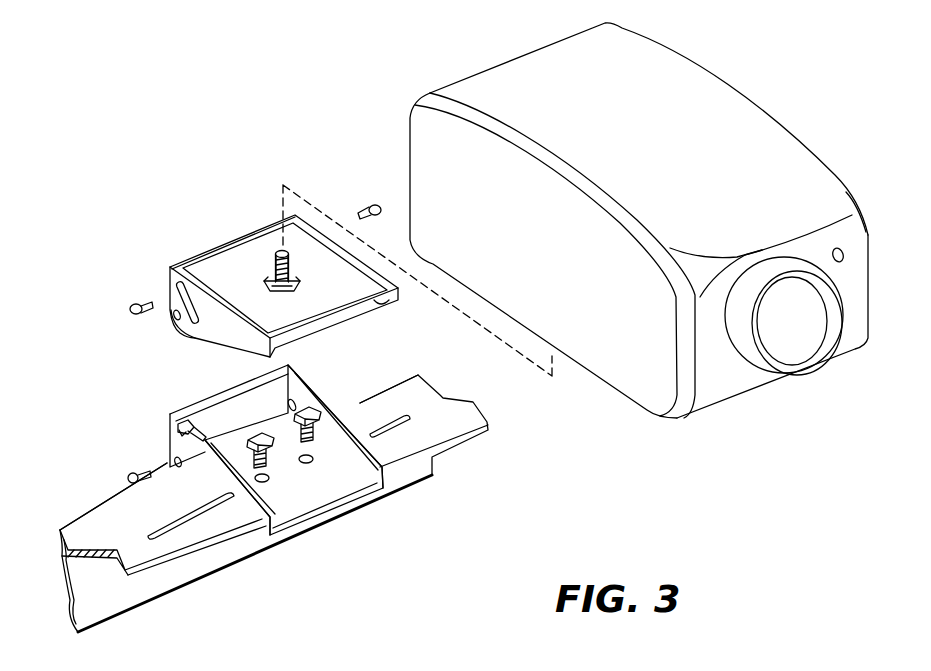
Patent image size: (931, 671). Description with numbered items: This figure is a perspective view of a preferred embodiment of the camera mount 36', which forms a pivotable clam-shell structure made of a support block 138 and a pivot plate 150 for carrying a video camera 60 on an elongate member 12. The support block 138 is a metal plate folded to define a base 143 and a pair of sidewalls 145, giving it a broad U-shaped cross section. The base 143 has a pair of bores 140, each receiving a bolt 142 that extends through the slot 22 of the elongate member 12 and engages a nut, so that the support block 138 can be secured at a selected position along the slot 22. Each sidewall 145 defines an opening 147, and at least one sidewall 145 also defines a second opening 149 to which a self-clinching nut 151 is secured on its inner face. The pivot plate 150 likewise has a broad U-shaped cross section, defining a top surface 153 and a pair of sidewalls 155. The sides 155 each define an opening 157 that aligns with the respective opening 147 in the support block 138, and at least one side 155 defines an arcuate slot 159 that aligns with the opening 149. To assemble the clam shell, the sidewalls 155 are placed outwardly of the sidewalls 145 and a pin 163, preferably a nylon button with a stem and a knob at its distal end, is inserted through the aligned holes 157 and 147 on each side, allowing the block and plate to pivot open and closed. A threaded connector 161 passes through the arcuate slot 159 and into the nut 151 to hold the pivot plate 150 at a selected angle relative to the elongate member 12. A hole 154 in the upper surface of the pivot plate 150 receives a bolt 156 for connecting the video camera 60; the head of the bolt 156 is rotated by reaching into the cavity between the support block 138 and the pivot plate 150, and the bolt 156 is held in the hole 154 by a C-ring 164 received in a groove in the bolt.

The camera mount 36' is at (47, 137).
The video camera 60 is at (735, 103).
The pivot plate 150 is at (200, 255).
The top surface 153 is at (185, 275).
The arcuate slot 159 is at (175, 290).
The opening 157 is at (176, 318).
The sidewalls 155 is at (232, 337).
The C-ring 164 is at (274, 265).
The hole 154 is at (293, 276).
The bolt 156 is at (283, 290).
The pin 163 is at (364, 204).
The threaded connector 161 is at (143, 302).
The support block 138 is at (307, 507).
The bore 140 is at (281, 507).
The bolt 142 is at (366, 462).
The base 143 is at (303, 506).
The second opening 149 is at (172, 430).
The self-clinching nut 151 is at (190, 428).
The opening 147 is at (172, 440).
The elongate member 12 is at (197, 555).
The sidewalls 145 is at (200, 500).
The slot 22 is at (197, 512).